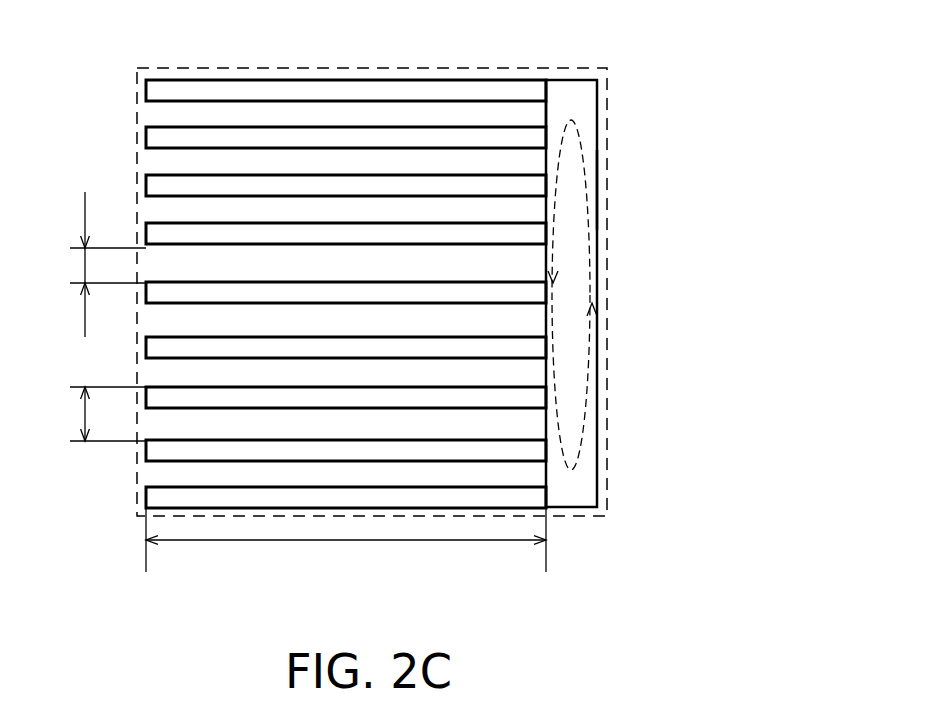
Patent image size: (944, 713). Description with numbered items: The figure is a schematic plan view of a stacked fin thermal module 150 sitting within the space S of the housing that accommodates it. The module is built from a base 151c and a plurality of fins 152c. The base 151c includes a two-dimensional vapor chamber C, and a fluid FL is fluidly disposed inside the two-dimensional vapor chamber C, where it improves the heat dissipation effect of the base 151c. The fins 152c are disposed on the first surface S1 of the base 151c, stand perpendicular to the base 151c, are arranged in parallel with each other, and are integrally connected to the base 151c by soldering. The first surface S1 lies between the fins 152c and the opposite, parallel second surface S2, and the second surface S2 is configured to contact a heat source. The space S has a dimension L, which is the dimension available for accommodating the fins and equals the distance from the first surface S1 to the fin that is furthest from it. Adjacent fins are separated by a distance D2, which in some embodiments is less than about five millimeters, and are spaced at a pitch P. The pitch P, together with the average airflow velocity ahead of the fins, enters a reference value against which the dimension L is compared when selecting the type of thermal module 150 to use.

The thermal module 150 is at (455, 304).
The base 151c is at (596, 91).
The fins 152c is at (311, 88).
The space S is at (137, 70).
The first surface S1 is at (545, 117).
The second surface S2 is at (599, 188).
The fluid FL is at (592, 380).
The two-dimensional vapor chamber C is at (578, 488).
The dimension L is at (346, 533).
The distance between adjacent fins D2 is at (90, 264).
The pitch P is at (96, 414).